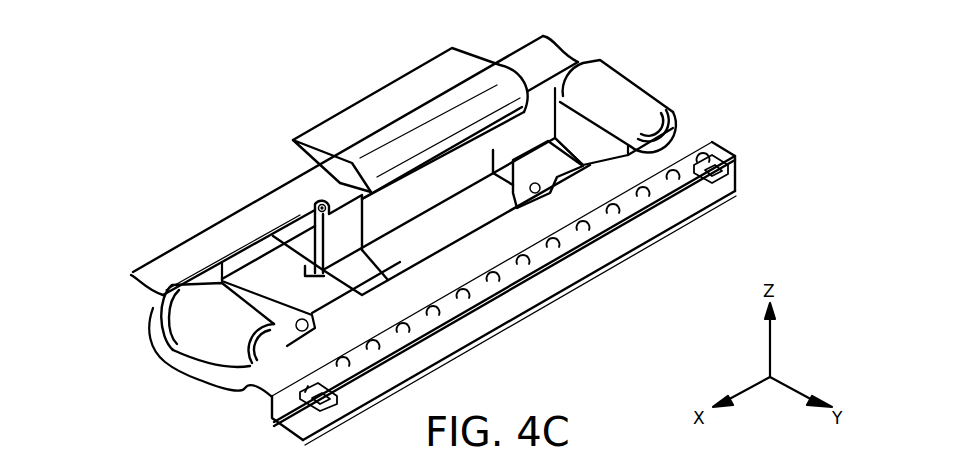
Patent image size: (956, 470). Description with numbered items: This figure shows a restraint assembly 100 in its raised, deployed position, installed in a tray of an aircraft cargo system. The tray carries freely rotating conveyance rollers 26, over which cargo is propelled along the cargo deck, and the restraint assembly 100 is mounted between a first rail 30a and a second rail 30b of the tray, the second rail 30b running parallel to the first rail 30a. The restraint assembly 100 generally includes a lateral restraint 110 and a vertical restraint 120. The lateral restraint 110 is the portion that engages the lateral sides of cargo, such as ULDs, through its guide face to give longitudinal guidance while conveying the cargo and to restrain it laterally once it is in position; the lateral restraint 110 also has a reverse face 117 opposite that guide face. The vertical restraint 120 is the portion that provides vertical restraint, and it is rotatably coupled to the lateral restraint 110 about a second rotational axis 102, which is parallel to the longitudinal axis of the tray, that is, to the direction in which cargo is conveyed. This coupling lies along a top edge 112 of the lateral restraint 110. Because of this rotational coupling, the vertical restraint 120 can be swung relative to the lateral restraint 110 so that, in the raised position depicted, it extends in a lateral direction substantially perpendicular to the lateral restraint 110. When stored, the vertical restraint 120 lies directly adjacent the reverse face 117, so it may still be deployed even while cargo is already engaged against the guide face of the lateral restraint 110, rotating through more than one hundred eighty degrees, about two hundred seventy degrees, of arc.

The restraint assembly 100 is at (202, 94).
The second rotational axis 102 is at (314, 207).
The lateral restraint 110 is at (313, 233).
The top edge 112 is at (340, 183).
The reverse face 117 is at (427, 178).
The vertical restraint 120 is at (403, 97).
The conveyance rollers 26 is at (210, 350).
The first rail 30a is at (446, 283).
The second rail 30b is at (163, 279).